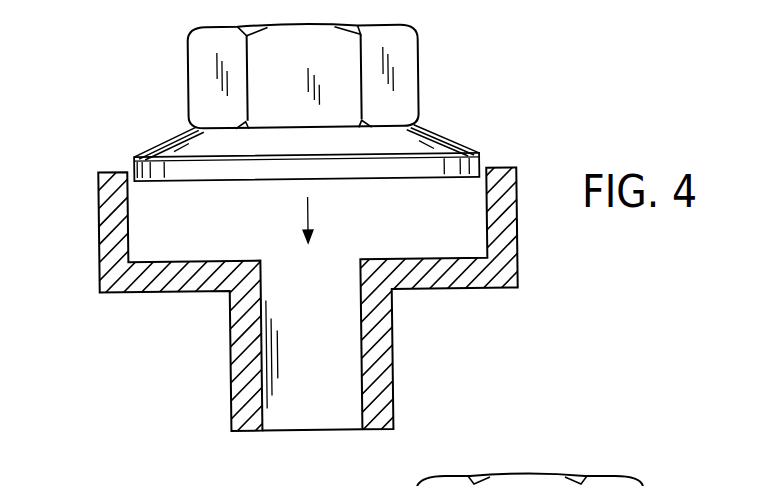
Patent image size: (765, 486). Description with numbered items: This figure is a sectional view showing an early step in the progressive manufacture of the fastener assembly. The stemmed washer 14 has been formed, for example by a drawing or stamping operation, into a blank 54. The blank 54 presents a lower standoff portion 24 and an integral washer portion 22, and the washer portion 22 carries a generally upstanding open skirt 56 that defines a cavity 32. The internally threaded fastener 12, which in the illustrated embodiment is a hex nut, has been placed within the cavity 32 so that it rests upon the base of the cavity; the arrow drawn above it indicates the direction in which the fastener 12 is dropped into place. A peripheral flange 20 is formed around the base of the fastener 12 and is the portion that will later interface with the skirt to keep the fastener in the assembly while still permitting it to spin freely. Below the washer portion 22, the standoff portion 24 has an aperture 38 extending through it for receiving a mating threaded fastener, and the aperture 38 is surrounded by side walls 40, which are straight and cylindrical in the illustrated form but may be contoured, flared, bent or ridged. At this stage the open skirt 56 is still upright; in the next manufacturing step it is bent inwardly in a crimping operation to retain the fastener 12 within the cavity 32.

The internally threaded fastener 12 is at (192, 72).
The stemmed washer 14 is at (517, 268).
The peripheral flange 20 is at (430, 130).
The washer portion 22 is at (480, 290).
The standoff portion 24 is at (391, 358).
The cavity 32 is at (140, 246).
The aperture 38 is at (276, 411).
The side walls 40 is at (229, 360).
The blank 54 is at (73, 214).
The open skirt 56 is at (118, 170).